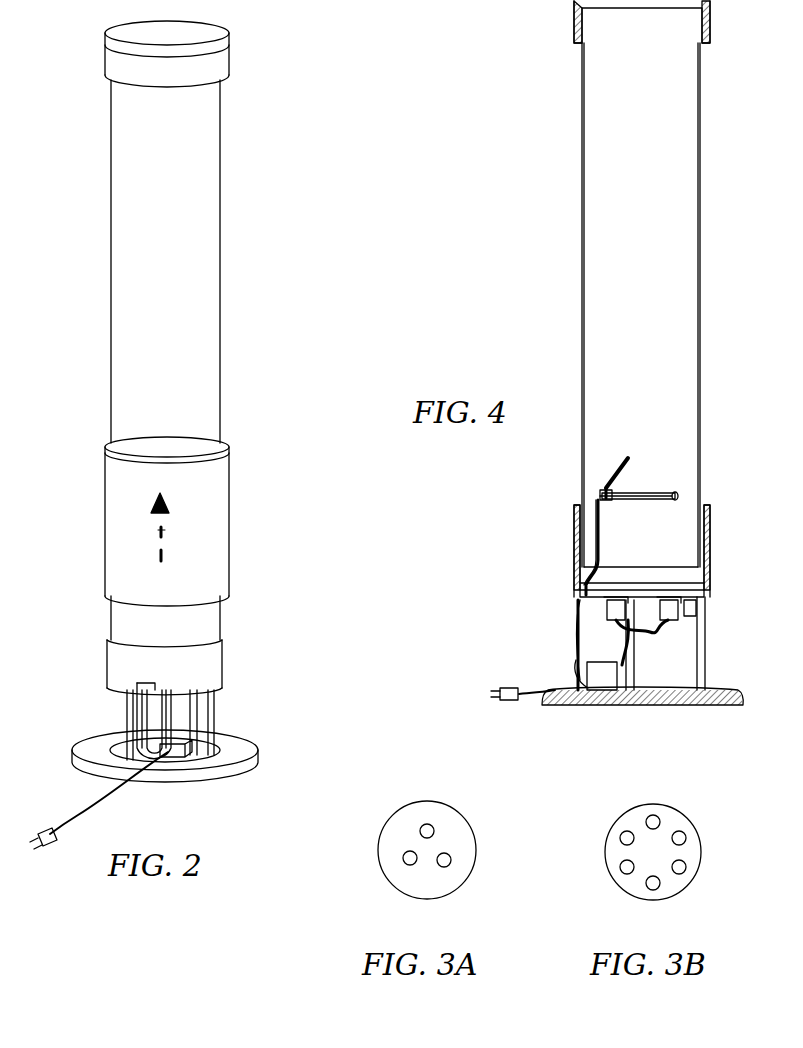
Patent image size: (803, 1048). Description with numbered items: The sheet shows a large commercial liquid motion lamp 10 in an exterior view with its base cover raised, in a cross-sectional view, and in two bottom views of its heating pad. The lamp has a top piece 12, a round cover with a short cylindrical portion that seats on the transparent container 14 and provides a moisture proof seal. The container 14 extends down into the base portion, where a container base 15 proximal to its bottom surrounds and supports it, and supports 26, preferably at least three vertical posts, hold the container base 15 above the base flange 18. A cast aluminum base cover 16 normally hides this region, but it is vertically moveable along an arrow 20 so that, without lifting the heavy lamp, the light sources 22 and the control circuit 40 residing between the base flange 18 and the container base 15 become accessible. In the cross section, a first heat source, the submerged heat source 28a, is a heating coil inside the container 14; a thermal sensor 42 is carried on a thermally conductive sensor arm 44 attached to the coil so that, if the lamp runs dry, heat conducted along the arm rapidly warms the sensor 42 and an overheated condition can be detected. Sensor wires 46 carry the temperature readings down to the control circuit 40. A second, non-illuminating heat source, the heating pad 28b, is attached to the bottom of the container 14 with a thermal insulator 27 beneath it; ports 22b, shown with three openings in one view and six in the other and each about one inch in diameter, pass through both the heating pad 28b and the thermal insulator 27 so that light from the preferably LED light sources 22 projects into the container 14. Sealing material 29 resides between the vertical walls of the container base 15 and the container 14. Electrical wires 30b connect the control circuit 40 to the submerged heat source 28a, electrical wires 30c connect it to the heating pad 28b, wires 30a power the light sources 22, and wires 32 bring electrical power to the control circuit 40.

In FIG. 2, the liquid motion lamp 10 is at (252, 186).
In FIG. 4, the liquid motion lamp 10 is at (733, 296).
In FIG. 2, the top piece 12 is at (116, 56).
In FIG. 4, the top piece 12 is at (576, 24).
In FIG. 2, the container 14 is at (126, 212).
In FIG. 4, the container 14 is at (604, 383).
In FIG. 2, the container base 15 is at (112, 668).
In FIG. 4, the container base 15 is at (708, 535).
In FIG. 2, the base cover 16 is at (116, 522).
In FIG. 2, the base flange 18 is at (252, 768).
In FIG. 2, the arrow 20 is at (167, 532).
In FIG. 4, the light sources 22 is at (618, 621).
In FIG. 3A, the ports 22b is at (425, 824).
In FIG. 3B, the ports 22b is at (651, 818).
In FIG. 2, the supports 26 is at (205, 735).
In FIG. 4, the thermal insulator 27 is at (703, 622).
In FIG. 4, the submerged heat source 28a is at (668, 490).
In FIG. 4, the heating pad 28b is at (697, 608).
In FIG. 3A, the heating pad 28b is at (450, 810).
In FIG. 3B, the heating pad 28b is at (675, 815).
In FIG. 4, the sealing material 29 is at (575, 520).
In FIG. 2, the wires 30a is at (215, 704).
In FIG. 4, the wires 30a is at (630, 682).
In FIG. 2, the electrical wires 30b is at (125, 700).
In FIG. 4, the electrical wires 30b is at (578, 602).
In FIG. 2, the electrical wires 30c is at (140, 722).
In FIG. 4, the electrical wires 30c is at (585, 672).
In FIG. 2, the wires 32 is at (130, 786).
In FIG. 4, the wires 32 is at (530, 702).
In FIG. 2, the control circuit 40 is at (183, 760).
In FIG. 4, the control circuit 40 is at (600, 682).
In FIG. 4, the thermal sensor 42 is at (629, 460).
In FIG. 4, the sensor arm 44 is at (615, 490).
In FIG. 2, the sensor wires 46 is at (140, 710).
In FIG. 4, the sensor wires 46 is at (600, 490).